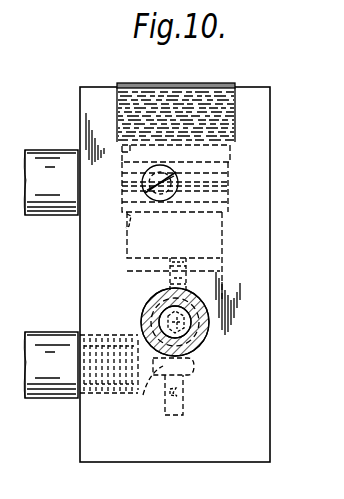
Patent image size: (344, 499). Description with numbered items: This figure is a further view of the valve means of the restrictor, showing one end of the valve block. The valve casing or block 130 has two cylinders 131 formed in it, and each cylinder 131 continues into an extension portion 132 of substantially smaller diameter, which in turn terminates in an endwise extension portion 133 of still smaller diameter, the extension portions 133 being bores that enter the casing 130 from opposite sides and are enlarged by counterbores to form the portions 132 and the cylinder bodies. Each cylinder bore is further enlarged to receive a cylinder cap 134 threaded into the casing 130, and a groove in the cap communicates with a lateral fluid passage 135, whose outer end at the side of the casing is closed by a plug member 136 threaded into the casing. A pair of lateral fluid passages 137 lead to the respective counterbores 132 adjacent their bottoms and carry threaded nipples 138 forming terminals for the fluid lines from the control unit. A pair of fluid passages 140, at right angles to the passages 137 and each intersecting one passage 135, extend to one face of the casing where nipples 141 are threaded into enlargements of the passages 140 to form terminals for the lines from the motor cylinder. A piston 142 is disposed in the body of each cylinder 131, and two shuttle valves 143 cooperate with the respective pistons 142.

The valve casing 130 is at (96, 96).
The cylinder 131 is at (225, 211).
The extension portion 132 is at (175, 284).
The endwise extension portion 133 is at (184, 411).
The cylinder cap 134 is at (212, 78).
The lateral fluid passage 135 is at (229, 183).
The plug member 136 is at (178, 201).
The lateral fluid passage 137 is at (197, 338).
The threaded nipple 138 is at (142, 310).
The fluid passage 140 is at (195, 368).
The nipple 141 is at (48, 160).
The piston 142 is at (127, 232).
The shuttle valve 143 is at (180, 393).